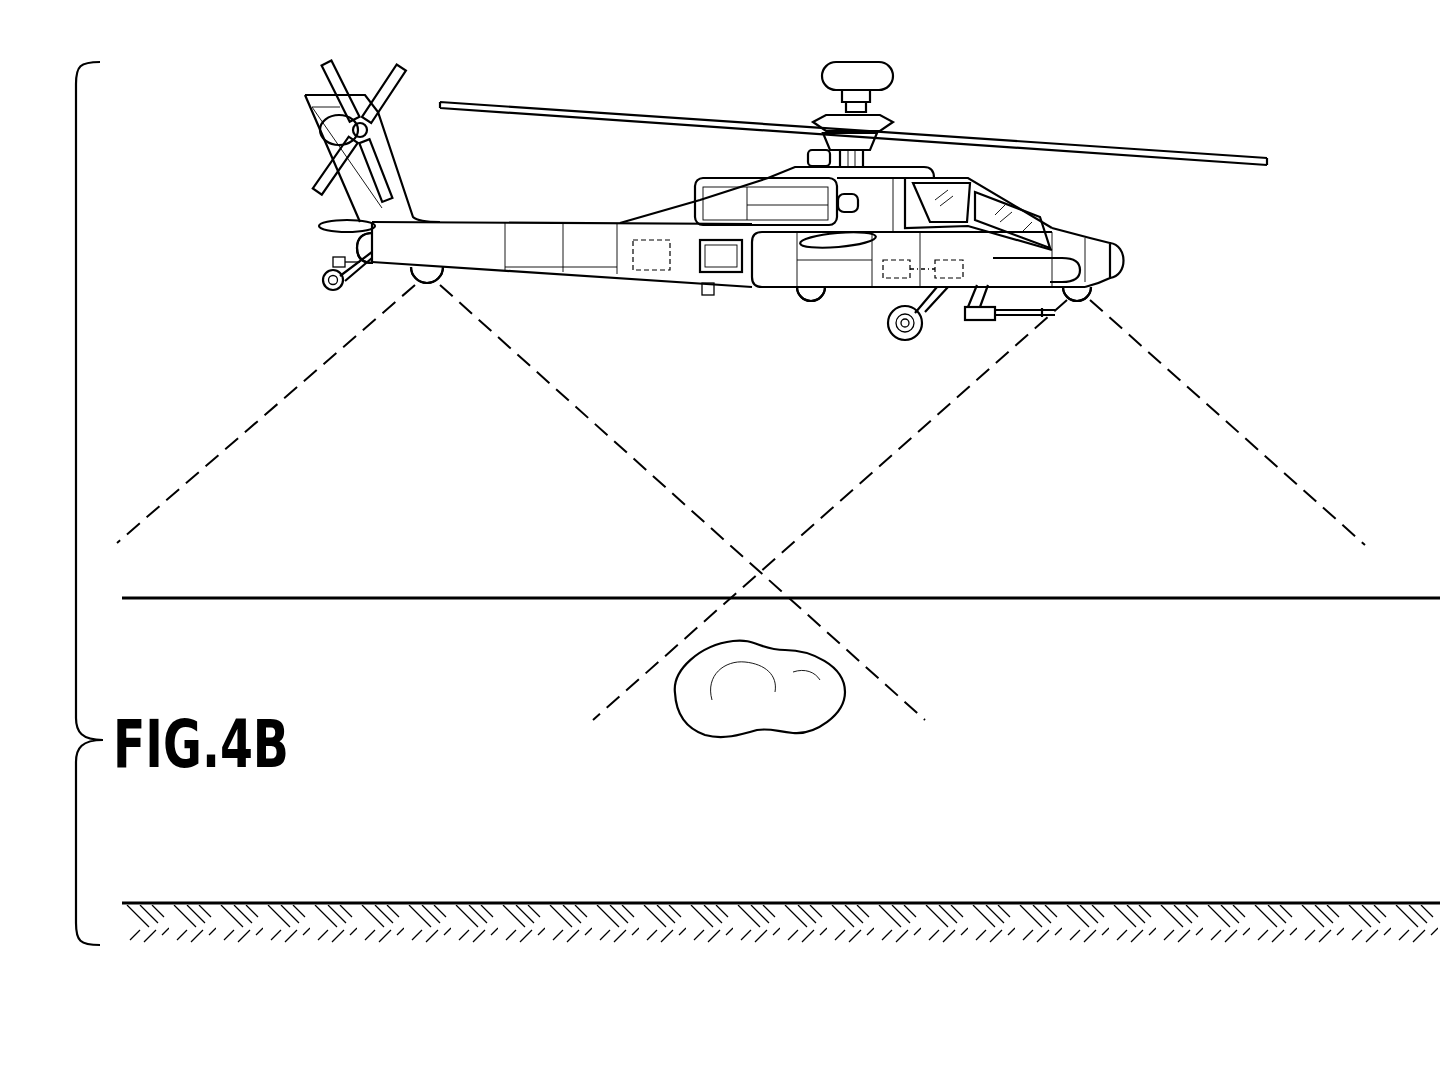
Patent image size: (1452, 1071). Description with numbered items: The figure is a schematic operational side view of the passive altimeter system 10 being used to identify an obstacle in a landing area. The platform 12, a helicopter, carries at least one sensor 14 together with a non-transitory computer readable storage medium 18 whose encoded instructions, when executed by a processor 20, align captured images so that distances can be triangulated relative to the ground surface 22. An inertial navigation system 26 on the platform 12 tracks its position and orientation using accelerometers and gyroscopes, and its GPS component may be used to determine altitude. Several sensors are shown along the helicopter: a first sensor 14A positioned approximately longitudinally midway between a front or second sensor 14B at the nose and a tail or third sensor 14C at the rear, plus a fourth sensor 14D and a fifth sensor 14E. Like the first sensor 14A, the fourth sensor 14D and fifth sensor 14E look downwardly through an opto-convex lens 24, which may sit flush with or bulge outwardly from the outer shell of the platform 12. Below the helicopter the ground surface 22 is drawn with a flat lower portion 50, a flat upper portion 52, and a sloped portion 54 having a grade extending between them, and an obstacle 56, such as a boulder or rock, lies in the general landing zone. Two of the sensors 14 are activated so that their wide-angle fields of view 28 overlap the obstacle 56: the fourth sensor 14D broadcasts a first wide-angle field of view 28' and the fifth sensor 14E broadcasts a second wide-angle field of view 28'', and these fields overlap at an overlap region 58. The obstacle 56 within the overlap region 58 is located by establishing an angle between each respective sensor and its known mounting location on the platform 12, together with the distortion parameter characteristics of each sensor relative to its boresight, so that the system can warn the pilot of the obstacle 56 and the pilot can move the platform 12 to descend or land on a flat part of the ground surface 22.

The passive altimeter system 10 is at (788, 242).
The platform 12 is at (913, 298).
The sensor 14 is at (715, 316).
The first sensor 14A is at (797, 316).
The second sensor 14B is at (1137, 247).
The third sensor 14C is at (346, 240).
The fourth sensor 14D is at (1076, 312).
The fifth sensor 14E is at (410, 298).
The non-transitory computer readable storage medium 18 is at (952, 280).
The processor 20 is at (892, 278).
The ground surface 22 is at (527, 651).
The opto-convex lens 24 is at (427, 284).
The inertial navigation system 26 is at (645, 260).
The wide-angle field of view 28 is at (741, 502).
The first wide-angle field of view 28' is at (521, 502).
The second wide-angle field of view 28'' is at (979, 510).
The flat lower portion 50 is at (458, 902).
The flat upper portion 52 is at (432, 597).
The sloped portion 54 is at (528, 753).
The obstacle 56 is at (765, 716).
The overlap region 58 is at (765, 619).